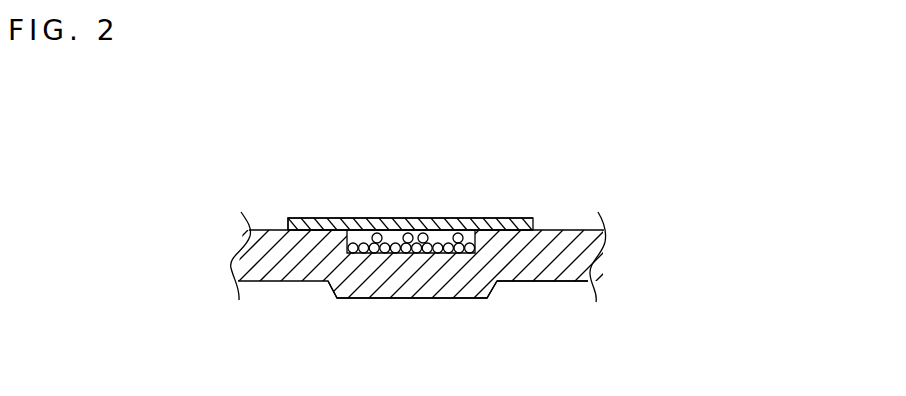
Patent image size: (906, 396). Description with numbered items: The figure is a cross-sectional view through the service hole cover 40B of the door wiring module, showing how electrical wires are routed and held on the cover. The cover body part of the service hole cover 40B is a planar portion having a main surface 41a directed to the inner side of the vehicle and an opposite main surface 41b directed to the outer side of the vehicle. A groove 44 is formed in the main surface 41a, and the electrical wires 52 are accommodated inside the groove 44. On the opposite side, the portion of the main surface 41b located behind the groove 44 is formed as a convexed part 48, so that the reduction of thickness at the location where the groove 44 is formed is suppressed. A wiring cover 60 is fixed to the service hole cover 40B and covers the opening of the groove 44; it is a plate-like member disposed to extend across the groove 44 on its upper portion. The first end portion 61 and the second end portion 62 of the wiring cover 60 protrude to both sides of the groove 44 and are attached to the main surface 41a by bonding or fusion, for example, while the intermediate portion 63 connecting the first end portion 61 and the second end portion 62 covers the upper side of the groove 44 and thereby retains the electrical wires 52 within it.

The service hole cover 40B is at (299, 288).
The main surface 41a is at (573, 230).
The main surface 41b is at (531, 283).
The groove 44 is at (411, 232).
The convexed part 48 is at (455, 299).
The electrical wire 52 is at (376, 234).
The wiring cover 60 is at (464, 216).
The first end portion 61 is at (500, 218).
The second end portion 62 is at (311, 218).
The intermediate portion 63 is at (421, 230).